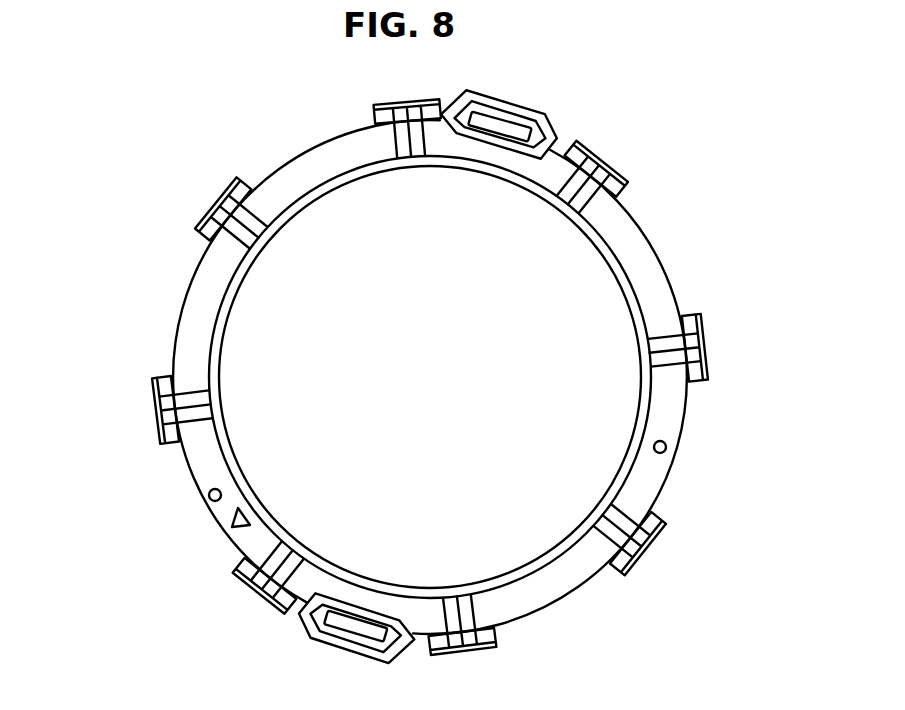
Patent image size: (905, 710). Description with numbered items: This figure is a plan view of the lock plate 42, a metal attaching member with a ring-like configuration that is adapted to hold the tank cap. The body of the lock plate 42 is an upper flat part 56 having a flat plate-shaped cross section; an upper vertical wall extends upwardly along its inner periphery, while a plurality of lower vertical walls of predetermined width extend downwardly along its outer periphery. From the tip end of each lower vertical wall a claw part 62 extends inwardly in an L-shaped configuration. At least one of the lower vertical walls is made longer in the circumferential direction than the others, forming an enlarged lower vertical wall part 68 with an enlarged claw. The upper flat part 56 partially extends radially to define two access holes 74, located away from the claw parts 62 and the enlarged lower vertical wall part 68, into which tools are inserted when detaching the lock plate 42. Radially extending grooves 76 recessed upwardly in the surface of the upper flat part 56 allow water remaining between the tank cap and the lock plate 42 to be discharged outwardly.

The lock plate 42 is at (228, 170).
The upper flat part 56 is at (205, 283).
The claw part 62 is at (162, 385).
The enlarged lower vertical wall part 68 is at (502, 636).
The access hole 74 is at (337, 626).
The groove 76 is at (622, 507).